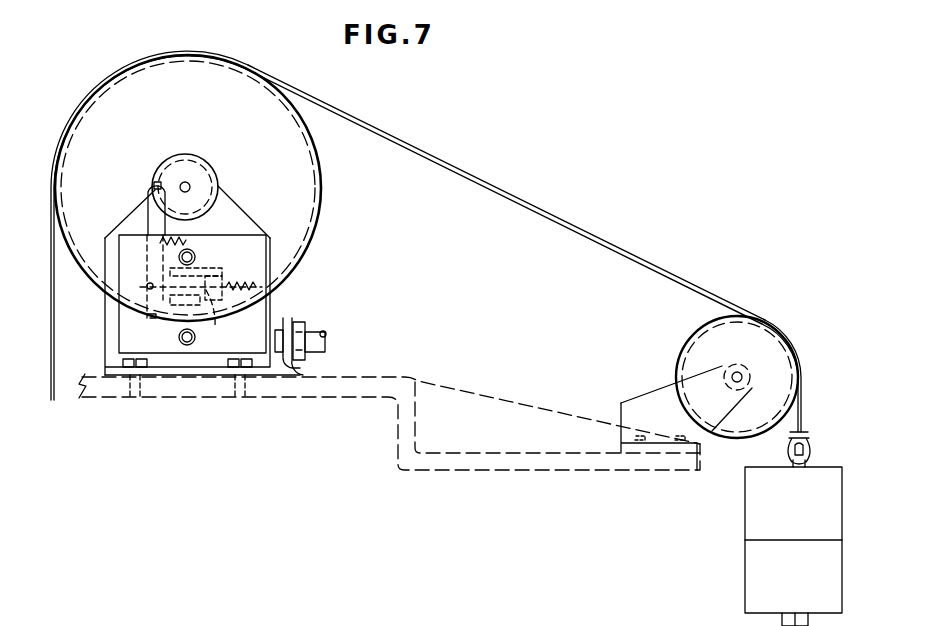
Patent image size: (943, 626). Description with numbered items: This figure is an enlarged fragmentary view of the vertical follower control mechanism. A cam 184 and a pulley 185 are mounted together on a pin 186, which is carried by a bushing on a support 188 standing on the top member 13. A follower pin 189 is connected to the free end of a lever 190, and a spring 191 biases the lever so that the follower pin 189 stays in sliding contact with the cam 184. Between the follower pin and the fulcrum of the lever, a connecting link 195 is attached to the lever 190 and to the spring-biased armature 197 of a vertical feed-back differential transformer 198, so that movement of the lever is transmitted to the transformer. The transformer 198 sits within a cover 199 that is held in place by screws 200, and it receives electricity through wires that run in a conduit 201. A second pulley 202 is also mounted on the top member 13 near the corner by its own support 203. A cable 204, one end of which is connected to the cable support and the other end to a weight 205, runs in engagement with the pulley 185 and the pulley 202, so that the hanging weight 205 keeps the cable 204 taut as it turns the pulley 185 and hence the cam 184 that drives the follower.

The top member 13 is at (272, 389).
The cam 184 is at (202, 157).
The pulley 185 is at (312, 148).
The pin 186 is at (192, 187).
The support 188 is at (241, 210).
The follower pin 189 is at (150, 184).
The lever 190 is at (148, 209).
The spring 191 is at (180, 242).
The connecting link 195 is at (152, 283).
The spring-biased armature 197 is at (219, 317).
The vertical feed-back differential transformer 198 is at (221, 267).
The cover 199 is at (257, 310).
The screws 200 is at (196, 256).
The conduit 201 is at (326, 334).
The pulley 202 is at (693, 357).
The support 203 is at (658, 389).
The cable 204 is at (654, 268).
The weight 205 is at (752, 522).